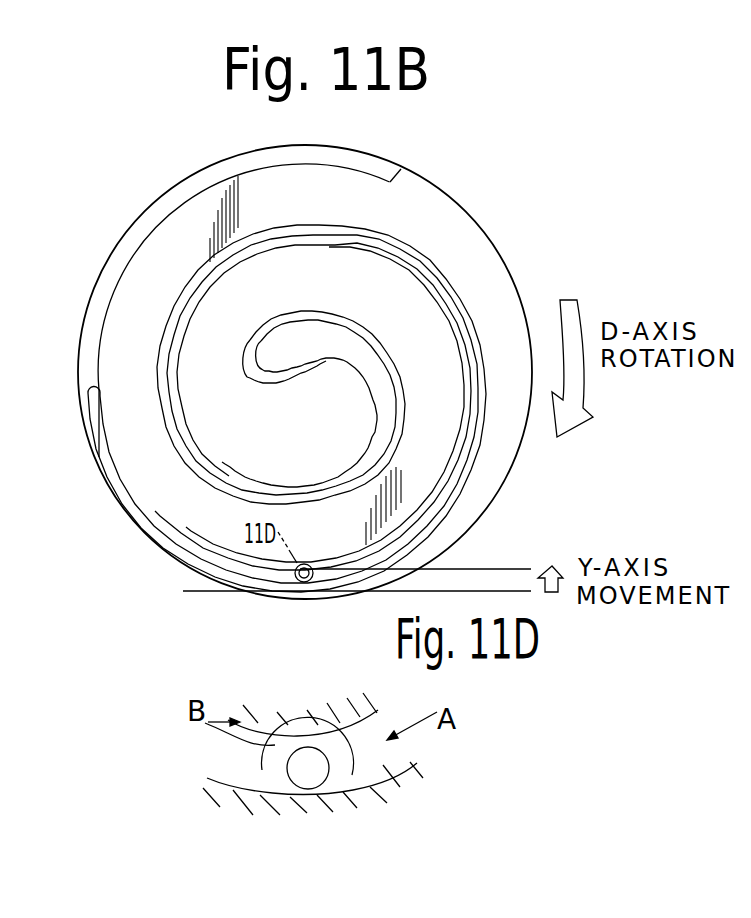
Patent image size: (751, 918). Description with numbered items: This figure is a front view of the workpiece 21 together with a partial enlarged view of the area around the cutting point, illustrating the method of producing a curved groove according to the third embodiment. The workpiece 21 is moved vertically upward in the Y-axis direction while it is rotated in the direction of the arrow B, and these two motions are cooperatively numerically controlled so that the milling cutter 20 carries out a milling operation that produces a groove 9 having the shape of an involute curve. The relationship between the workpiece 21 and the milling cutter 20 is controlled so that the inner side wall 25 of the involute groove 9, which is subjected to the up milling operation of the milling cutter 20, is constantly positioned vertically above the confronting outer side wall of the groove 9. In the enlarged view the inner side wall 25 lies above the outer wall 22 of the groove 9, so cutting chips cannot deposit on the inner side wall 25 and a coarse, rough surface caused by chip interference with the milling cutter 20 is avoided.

In FIG. 11B, the workpiece 21 is at (443, 217).
In FIG. 11B, the milling cutter 20 is at (296, 581).
In FIG. 11D, the milling cutter 20 is at (307, 771).
In FIG. 11D, the inner side wall 25 is at (353, 777).
In FIG. 11D, the cam groove wall 22 is at (288, 786).
In FIG. 11D, the groove 9 is at (377, 763).